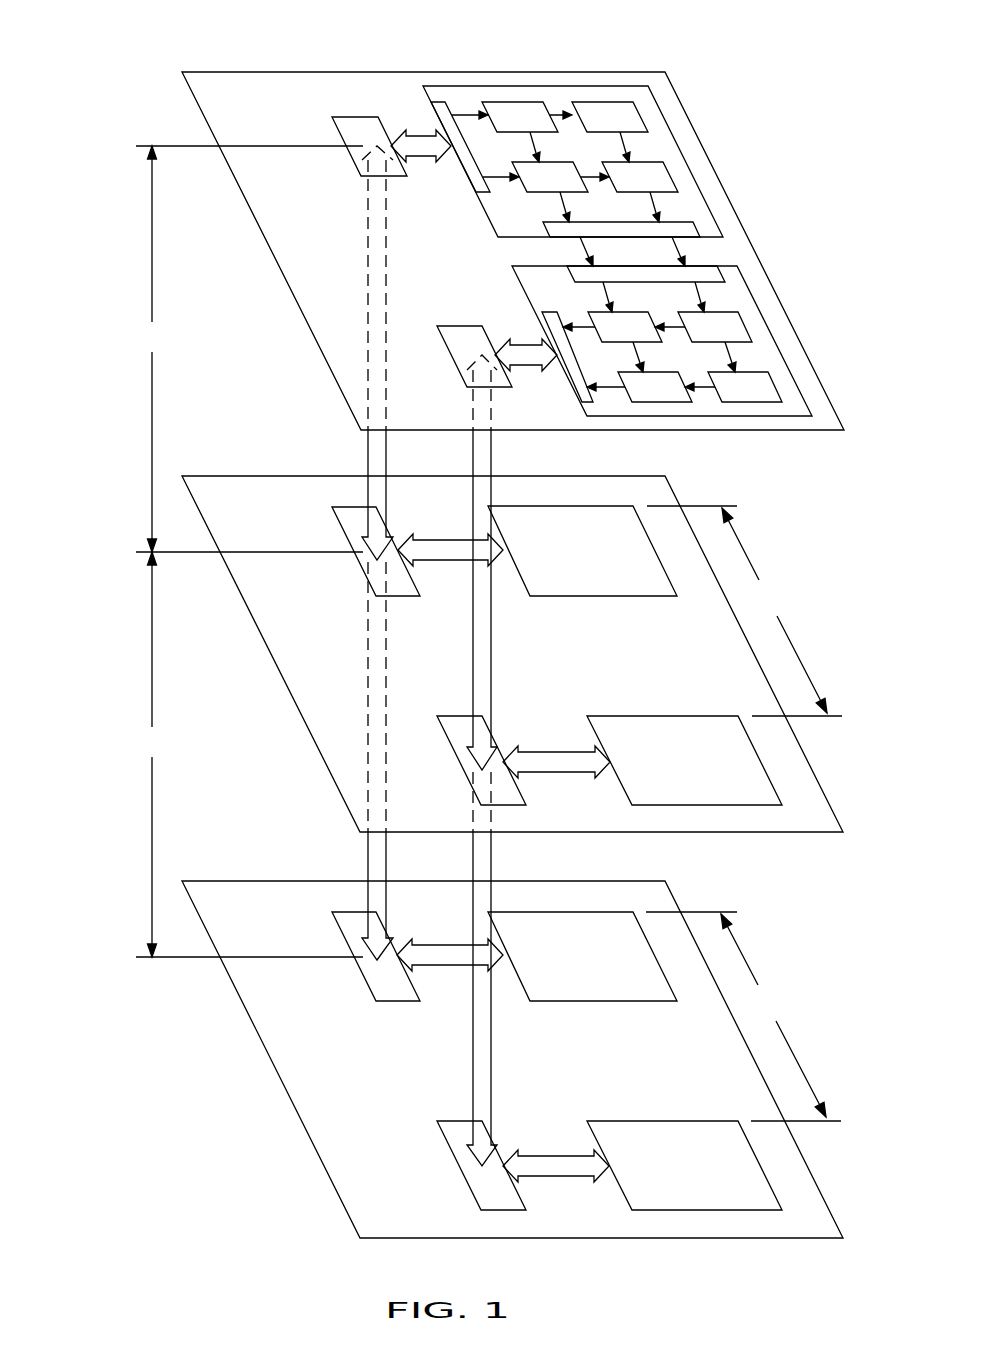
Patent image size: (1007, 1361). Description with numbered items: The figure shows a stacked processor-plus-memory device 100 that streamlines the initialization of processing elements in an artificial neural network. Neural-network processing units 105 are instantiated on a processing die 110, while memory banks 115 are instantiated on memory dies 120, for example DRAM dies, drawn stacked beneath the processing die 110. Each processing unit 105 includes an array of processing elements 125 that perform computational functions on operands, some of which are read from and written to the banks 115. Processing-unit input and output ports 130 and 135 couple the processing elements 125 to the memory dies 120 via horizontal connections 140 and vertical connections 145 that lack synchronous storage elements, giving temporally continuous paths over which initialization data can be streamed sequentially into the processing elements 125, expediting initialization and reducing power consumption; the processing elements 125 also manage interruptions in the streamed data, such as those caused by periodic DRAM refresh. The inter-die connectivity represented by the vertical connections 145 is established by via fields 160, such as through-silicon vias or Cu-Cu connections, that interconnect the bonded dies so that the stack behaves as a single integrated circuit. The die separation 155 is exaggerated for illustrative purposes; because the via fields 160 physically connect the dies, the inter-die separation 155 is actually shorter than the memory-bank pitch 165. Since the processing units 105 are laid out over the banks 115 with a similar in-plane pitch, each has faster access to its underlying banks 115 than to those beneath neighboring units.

The stacked processor-plus-memory device 100 is at (145, 45).
The neural-network processing unit 105 is at (537, 225).
The processing die 110 is at (297, 129).
The memory bank 115 is at (622, 549).
The memory die 120 is at (292, 534).
The processing element 125 is at (536, 129).
The processing-unit input port 130 is at (435, 110).
The processing-unit output port 135 is at (606, 238).
The horizontal connection 140 is at (412, 158).
The vertical connection 145 is at (366, 265).
The die separation 155 is at (249, 551).
The via field 160 is at (360, 157).
The memory-bank pitch 165 is at (744, 813).